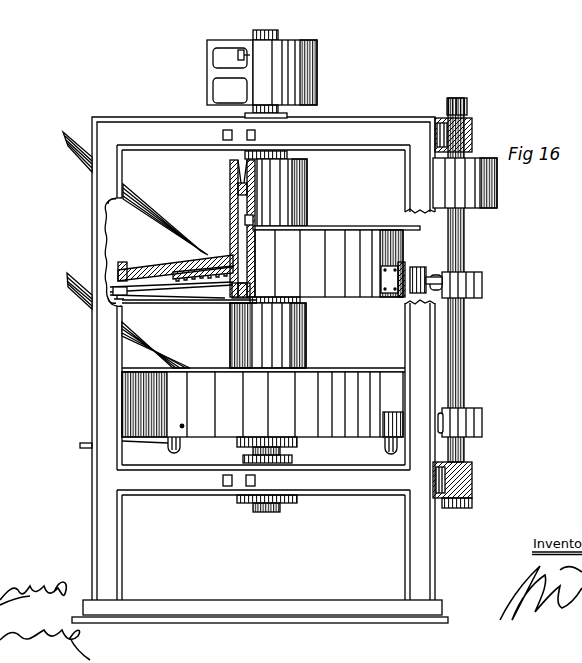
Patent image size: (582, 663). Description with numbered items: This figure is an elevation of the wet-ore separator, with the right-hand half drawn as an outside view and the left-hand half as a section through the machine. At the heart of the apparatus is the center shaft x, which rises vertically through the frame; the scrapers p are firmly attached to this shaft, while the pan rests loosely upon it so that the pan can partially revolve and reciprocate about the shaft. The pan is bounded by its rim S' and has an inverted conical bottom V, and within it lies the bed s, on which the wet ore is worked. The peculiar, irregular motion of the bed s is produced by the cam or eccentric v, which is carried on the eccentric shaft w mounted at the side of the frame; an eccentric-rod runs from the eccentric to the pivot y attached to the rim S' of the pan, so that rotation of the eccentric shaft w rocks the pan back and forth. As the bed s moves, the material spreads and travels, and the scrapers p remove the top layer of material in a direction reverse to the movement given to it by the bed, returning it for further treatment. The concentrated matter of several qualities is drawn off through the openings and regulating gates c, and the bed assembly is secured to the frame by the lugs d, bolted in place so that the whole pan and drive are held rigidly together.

The center shaft x is at (262, 67).
The rim of the pan S' is at (336, 261).
The scrapers p is at (175, 266).
The bed s is at (183, 290).
The openings and regulating gates c is at (282, 445).
The eccentric shaft w is at (465, 280).
The inverted conical bottom V is at (465, 183).
The cam or eccentric v is at (456, 354).
The lugs d is at (389, 279).
The pivot of the eccentric-rod y is at (420, 274).